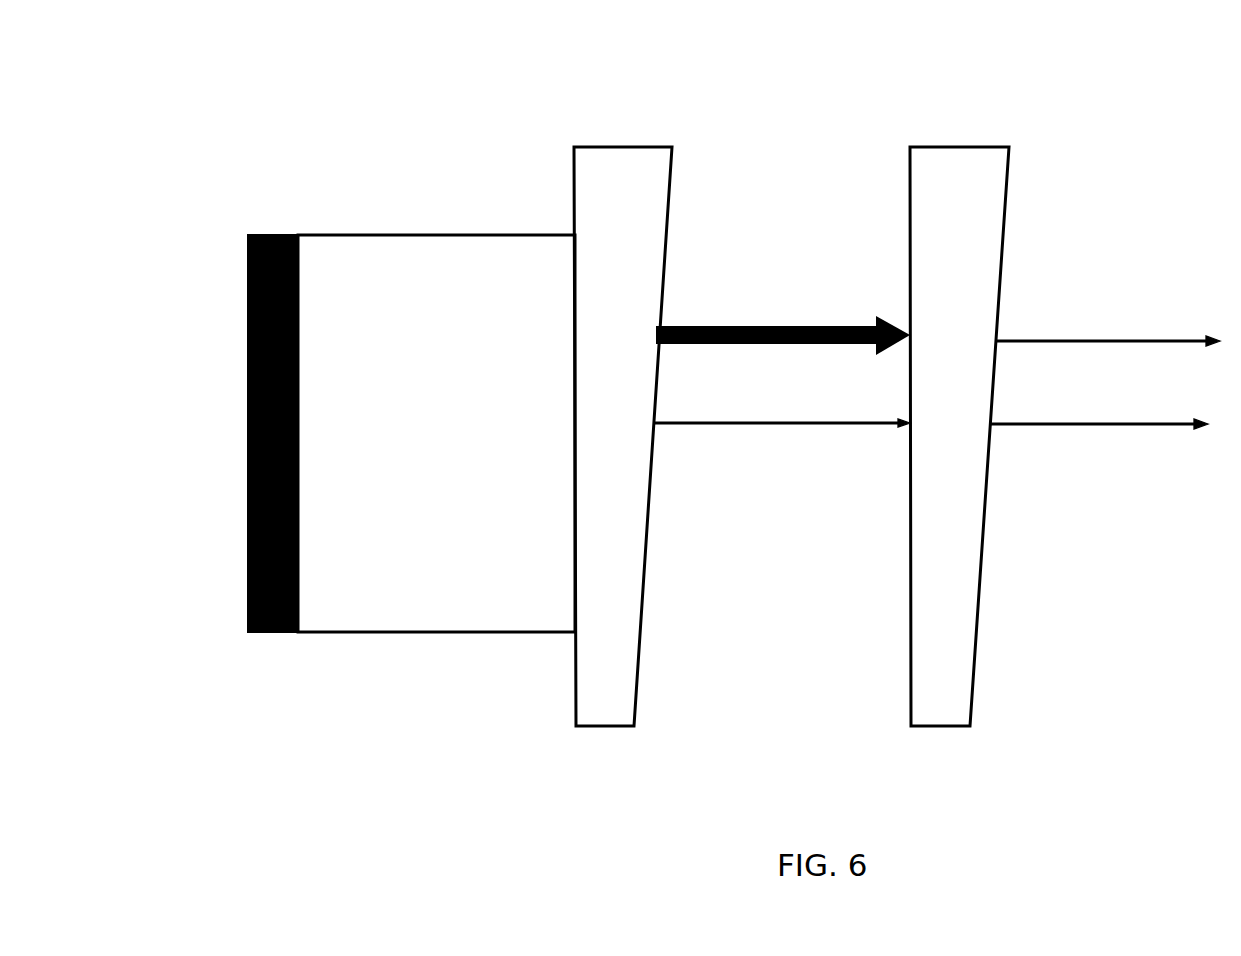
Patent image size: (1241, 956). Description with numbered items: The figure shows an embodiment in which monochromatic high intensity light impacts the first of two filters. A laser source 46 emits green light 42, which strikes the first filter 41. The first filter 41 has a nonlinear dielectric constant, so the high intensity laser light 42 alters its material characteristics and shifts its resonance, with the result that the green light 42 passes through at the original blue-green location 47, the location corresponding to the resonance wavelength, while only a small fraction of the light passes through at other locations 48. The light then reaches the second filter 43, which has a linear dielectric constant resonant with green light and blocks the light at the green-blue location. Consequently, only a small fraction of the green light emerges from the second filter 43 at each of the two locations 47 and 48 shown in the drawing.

The first filter 41 is at (608, 175).
The green light 42 is at (497, 282).
The second filter 43 is at (944, 175).
The laser source 46 is at (256, 300).
The original blue-green location 47 is at (668, 313).
The other locations 48 is at (667, 441).